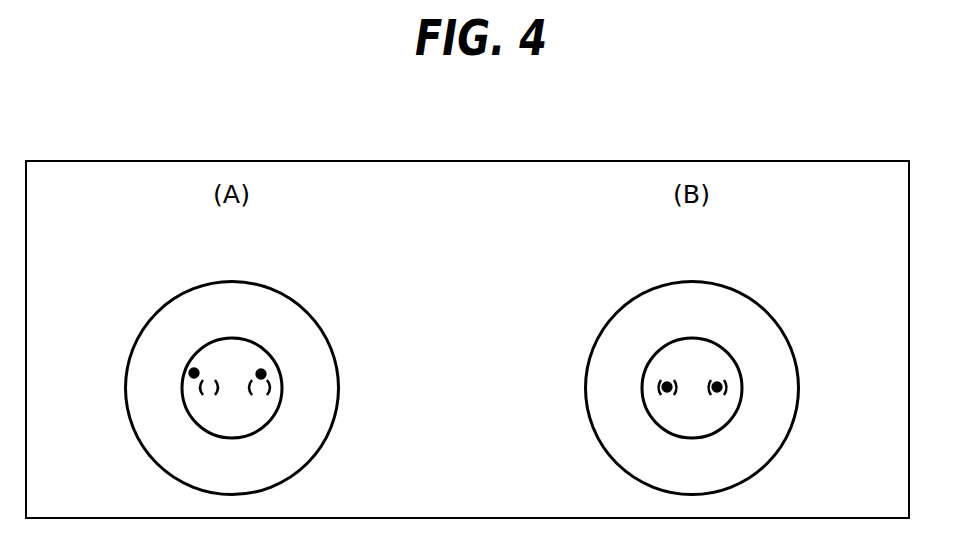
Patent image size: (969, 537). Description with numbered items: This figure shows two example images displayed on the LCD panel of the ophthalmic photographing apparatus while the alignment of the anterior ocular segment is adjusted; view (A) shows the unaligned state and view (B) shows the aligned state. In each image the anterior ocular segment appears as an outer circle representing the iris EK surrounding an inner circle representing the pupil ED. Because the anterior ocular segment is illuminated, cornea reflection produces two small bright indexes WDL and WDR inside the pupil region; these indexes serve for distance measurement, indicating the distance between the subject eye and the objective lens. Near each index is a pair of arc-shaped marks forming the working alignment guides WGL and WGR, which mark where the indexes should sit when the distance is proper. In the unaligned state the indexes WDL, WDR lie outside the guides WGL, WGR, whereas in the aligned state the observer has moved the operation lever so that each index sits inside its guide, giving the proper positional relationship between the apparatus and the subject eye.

The iris EK is at (250, 292).
The pupil ED is at (258, 352).
The index WDL is at (194, 373).
The index WDR is at (261, 374).
The working alignment guide WGL is at (197, 393).
The working alignment guide WGR is at (268, 393).